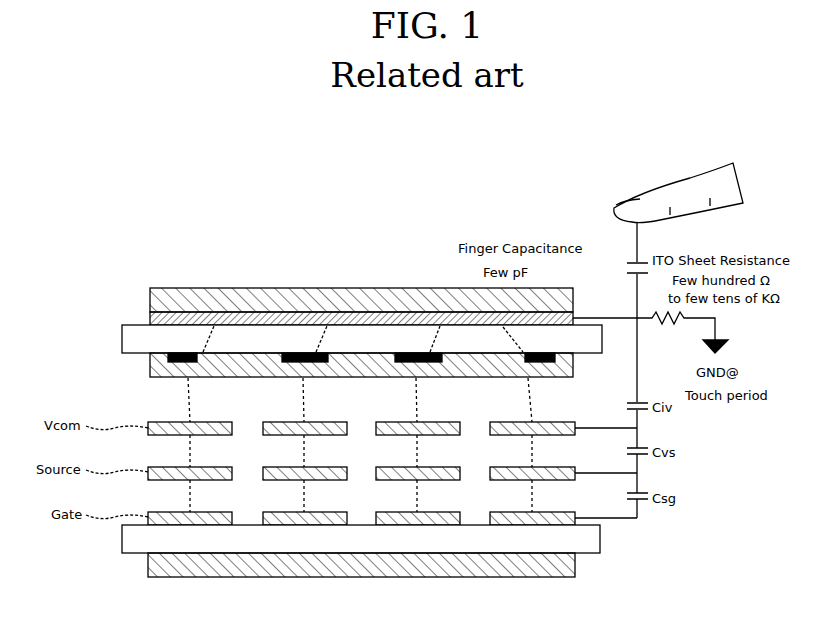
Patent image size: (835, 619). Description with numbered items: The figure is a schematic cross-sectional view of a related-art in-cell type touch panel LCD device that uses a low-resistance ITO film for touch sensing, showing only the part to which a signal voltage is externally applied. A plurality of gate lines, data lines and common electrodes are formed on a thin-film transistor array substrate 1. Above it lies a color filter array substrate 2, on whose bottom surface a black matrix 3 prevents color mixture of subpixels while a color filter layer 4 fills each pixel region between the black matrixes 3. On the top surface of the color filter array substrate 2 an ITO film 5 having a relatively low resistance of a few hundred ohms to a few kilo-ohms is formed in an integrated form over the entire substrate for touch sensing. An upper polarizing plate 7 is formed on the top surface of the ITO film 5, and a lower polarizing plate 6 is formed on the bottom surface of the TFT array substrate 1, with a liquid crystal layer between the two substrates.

The thin-film transistor (TFT) array substrate 1 is at (592, 538).
The color filter array substrate 2 is at (138, 340).
The black matrix 3 is at (545, 364).
The color filter layer 4 is at (150, 366).
The ITO film 5 is at (150, 318).
The lower polarizing plate 6 is at (565, 565).
The upper polarizing plate 7 is at (441, 288).